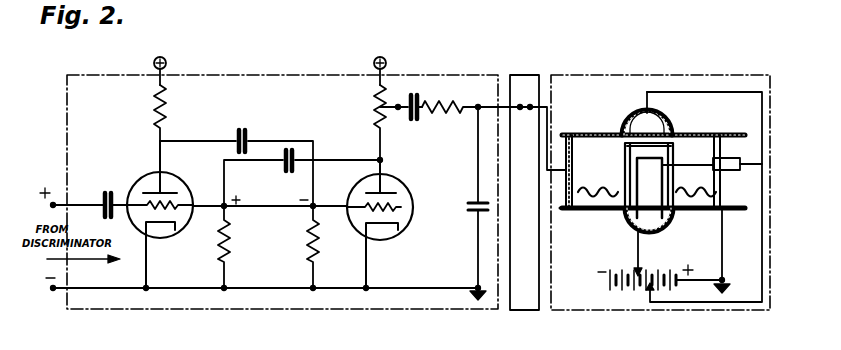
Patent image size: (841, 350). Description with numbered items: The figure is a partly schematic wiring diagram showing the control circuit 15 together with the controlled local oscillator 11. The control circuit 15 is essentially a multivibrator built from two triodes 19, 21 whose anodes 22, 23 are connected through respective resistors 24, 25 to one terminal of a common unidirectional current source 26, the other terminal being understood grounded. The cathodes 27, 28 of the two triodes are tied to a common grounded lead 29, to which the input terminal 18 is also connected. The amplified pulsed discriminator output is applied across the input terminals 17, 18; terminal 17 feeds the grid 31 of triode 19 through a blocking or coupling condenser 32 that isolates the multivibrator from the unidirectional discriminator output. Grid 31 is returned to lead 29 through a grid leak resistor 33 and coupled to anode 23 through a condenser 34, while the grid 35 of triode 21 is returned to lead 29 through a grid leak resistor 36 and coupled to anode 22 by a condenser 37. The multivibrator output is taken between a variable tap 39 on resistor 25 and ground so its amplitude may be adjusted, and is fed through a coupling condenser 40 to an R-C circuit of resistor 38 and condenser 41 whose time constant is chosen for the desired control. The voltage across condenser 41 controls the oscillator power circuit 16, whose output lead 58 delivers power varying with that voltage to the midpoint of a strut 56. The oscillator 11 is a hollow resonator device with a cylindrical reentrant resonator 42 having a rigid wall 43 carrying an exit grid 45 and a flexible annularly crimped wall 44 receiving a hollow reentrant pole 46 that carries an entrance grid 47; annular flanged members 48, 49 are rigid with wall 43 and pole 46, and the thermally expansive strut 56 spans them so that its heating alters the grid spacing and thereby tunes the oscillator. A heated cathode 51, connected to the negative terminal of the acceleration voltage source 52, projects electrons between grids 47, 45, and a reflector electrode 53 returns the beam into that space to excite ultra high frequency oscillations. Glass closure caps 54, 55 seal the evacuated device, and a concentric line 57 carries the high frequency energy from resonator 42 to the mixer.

The local oscillator 11 is at (657, 69).
The control circuit 15 is at (258, 75).
The oscillator power circuit 16 is at (530, 70).
The input terminal 17 is at (53, 205).
The input terminal 18 is at (53, 288).
The triode 19 is at (152, 232).
The triode 21 is at (374, 240).
The anode 22 is at (168, 188).
The anode 23 is at (349, 182).
The resistor 24 is at (156, 112).
The resistor 25 is at (371, 100).
The unidirectional current source 26 is at (154, 63).
The cathode 27 is at (186, 226).
The cathode 28 is at (410, 228).
The grounded lead 29 is at (98, 290).
The grid 31 is at (178, 206).
The coupling condenser 32 is at (110, 192).
The grid leak resistor 33 is at (230, 248).
The condenser 34 is at (288, 170).
The grid 35 is at (402, 206).
The grid leak resistor 36 is at (316, 252).
The condenser 37 is at (252, 137).
The resistor 38 is at (445, 120).
The variable tap 39 is at (395, 110).
The coupling condenser 40 is at (417, 95).
The condenser 41 is at (476, 220).
The hollow resonator 42 is at (720, 186).
The rigid wall 43 is at (620, 128).
The flexible annularly crimped wall 44 is at (604, 212).
The exit grid 45 is at (672, 130).
The hollow reentrant pole 46 is at (676, 186).
The entrance grid 47 is at (668, 150).
The annular flanged member 48 is at (574, 123).
The annular flanged member 49 is at (588, 212).
The cathode 51 is at (666, 170).
The acceleration voltage source 52 is at (608, 276).
The reflector electrode 53 is at (662, 110).
The glass closure cap 54 is at (644, 108).
The glass closure cap 55 is at (674, 226).
The strut 56 is at (560, 204).
The concentric line 57 is at (724, 170).
The output lead 58 is at (547, 109).